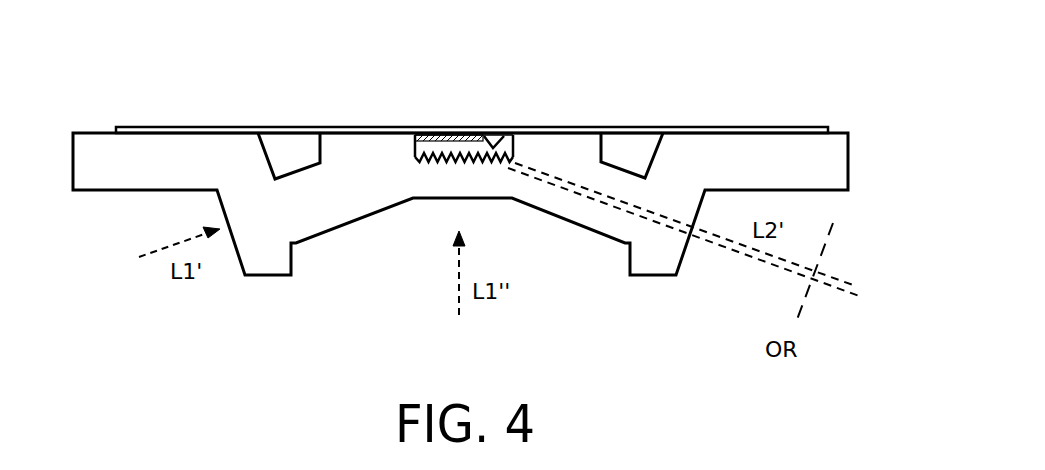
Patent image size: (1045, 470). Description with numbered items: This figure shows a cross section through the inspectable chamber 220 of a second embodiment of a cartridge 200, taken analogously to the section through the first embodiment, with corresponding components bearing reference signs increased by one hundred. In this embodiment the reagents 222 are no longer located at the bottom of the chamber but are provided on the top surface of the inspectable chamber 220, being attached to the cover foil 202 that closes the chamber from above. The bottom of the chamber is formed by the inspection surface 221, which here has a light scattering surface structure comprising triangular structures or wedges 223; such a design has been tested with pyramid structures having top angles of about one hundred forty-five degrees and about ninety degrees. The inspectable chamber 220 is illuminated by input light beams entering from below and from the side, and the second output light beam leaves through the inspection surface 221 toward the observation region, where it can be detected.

The cartridge 200 is at (756, 104).
The cover foil 202 is at (163, 127).
The inspectable chamber 220 is at (438, 147).
The inspection surface 221 is at (493, 138).
The reagents 222 is at (468, 147).
The wedges 223 is at (447, 163).